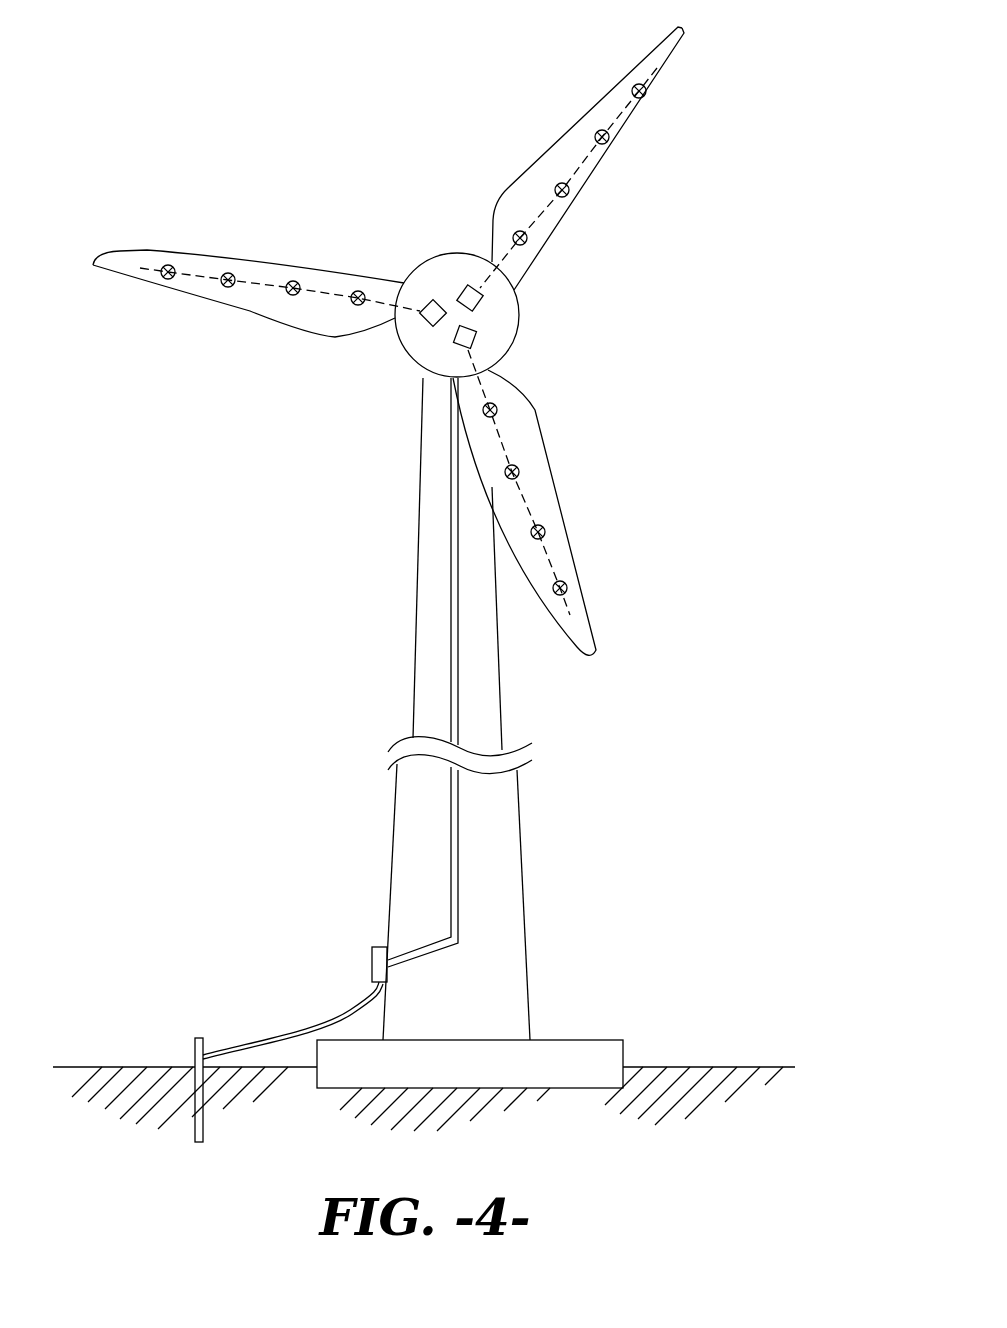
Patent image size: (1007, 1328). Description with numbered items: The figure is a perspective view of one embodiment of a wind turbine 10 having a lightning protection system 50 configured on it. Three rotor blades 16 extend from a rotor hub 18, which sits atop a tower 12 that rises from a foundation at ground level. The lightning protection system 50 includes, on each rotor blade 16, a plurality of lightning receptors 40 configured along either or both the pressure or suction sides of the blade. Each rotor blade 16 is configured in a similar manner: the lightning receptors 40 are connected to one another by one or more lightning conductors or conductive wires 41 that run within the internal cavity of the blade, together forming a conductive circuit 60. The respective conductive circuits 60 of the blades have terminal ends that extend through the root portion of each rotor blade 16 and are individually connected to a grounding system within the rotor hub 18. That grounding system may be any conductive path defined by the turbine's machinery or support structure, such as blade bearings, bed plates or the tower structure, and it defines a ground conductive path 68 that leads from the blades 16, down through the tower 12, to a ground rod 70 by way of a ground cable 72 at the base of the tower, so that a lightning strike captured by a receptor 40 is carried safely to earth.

The wind turbine 10 is at (422, 232).
The tower 12 is at (500, 875).
The rotor blade 16 is at (198, 287).
The rotor hub 18 is at (413, 335).
The lightning receptor 40 is at (298, 295).
The lightning conductor 41 is at (210, 277).
The lightning protection system 50 is at (213, 130).
The conductive circuit 60 is at (270, 268).
The ground conductive path 68 is at (450, 622).
The ground rod 70 is at (195, 1048).
The ground cable 72 is at (348, 997).